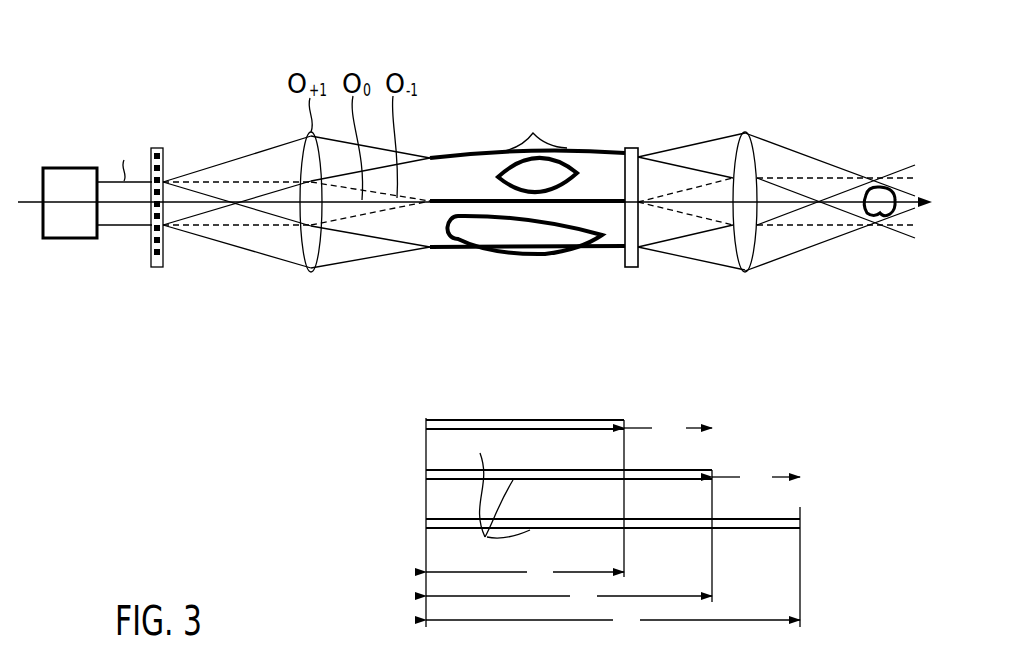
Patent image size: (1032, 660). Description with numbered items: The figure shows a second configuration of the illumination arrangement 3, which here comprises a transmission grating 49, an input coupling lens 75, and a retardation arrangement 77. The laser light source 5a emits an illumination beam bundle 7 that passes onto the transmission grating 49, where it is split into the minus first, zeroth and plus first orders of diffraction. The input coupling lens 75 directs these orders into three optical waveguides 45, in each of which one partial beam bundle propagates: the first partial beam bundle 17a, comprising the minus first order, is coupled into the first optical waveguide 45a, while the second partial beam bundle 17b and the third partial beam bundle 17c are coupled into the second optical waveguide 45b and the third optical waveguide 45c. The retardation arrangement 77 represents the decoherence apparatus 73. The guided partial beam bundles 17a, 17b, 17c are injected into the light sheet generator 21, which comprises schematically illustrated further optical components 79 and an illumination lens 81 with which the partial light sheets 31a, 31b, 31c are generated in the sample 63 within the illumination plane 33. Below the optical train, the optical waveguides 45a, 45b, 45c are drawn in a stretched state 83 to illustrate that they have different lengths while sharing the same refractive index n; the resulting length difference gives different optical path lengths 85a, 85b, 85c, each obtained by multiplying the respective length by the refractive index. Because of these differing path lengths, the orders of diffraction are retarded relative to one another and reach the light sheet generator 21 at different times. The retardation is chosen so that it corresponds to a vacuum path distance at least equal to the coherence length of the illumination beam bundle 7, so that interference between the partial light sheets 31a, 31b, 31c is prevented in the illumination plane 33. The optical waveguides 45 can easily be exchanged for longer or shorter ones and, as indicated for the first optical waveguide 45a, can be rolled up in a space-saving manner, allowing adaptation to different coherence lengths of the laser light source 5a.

The laser light source 5a is at (50, 168).
The illumination beam bundle 7 is at (124, 226).
The transmission grating 49 is at (158, 148).
The input coupling lens 75 is at (305, 268).
The first partial beam bundle 17a is at (527, 163).
The second partial beam bundle 17b is at (527, 118).
The third partial beam bundle 17c is at (515, 81).
The first optical waveguide 45a is at (482, 216).
The second optical waveguide 45b is at (462, 198).
The third optical waveguide 45c is at (442, 155).
The optical waveguides 45 is at (515, 167).
The decoherence apparatus 73 is at (515, 167).
The retardation arrangement 77 is at (515, 167).
The further optical components 79 is at (637, 148).
The illumination lens 81 is at (745, 132).
The first partial light sheet 31a is at (830, 170).
The second partial light sheet 31b is at (830, 170).
The third partial light sheet 31c is at (838, 200).
The sample 63 is at (880, 187).
The illumination plane 33 is at (895, 214).
The illumination arrangement 3 is at (145, 327).
The light sheet generator 21 is at (807, 330).
The stretched state 83 is at (576, 504).
The first optical path length 85a is at (778, 518).
The second optical path length 85b is at (698, 471).
The third optical path length 85c is at (590, 421).